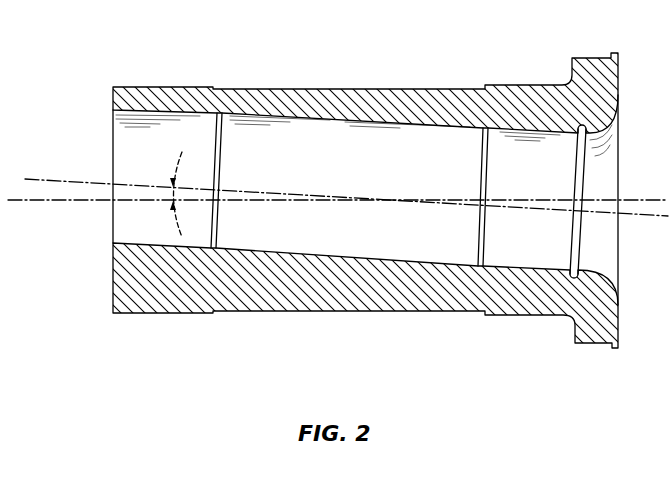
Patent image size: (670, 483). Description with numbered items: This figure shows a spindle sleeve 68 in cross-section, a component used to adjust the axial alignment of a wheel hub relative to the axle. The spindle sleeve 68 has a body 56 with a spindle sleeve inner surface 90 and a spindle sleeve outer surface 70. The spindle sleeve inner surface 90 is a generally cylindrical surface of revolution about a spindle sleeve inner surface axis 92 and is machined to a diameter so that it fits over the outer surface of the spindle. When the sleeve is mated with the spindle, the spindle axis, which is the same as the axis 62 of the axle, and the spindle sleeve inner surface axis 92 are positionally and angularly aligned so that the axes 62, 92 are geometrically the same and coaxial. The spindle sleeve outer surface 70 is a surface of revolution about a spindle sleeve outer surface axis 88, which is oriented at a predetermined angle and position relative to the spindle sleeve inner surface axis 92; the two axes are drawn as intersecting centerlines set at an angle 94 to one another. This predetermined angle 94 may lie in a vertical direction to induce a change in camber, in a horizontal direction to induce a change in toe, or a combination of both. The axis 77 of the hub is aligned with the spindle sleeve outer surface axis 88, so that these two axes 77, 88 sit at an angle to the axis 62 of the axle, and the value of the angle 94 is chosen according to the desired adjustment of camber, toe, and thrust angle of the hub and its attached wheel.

The spindle sleeve 68 is at (365, 201).
The body 56 is at (460, 297).
The spindle sleeve outer surface 70 is at (337, 316).
The spindle sleeve inner surface 90 is at (236, 250).
The angle 94 is at (176, 168).
The axis 62 is at (346, 174).
The spindle sleeve inner surface axis 92 is at (50, 178).
The spindle sleeve outer surface axis 88 is at (338, 228).
The axis of the hub 77 is at (52, 203).